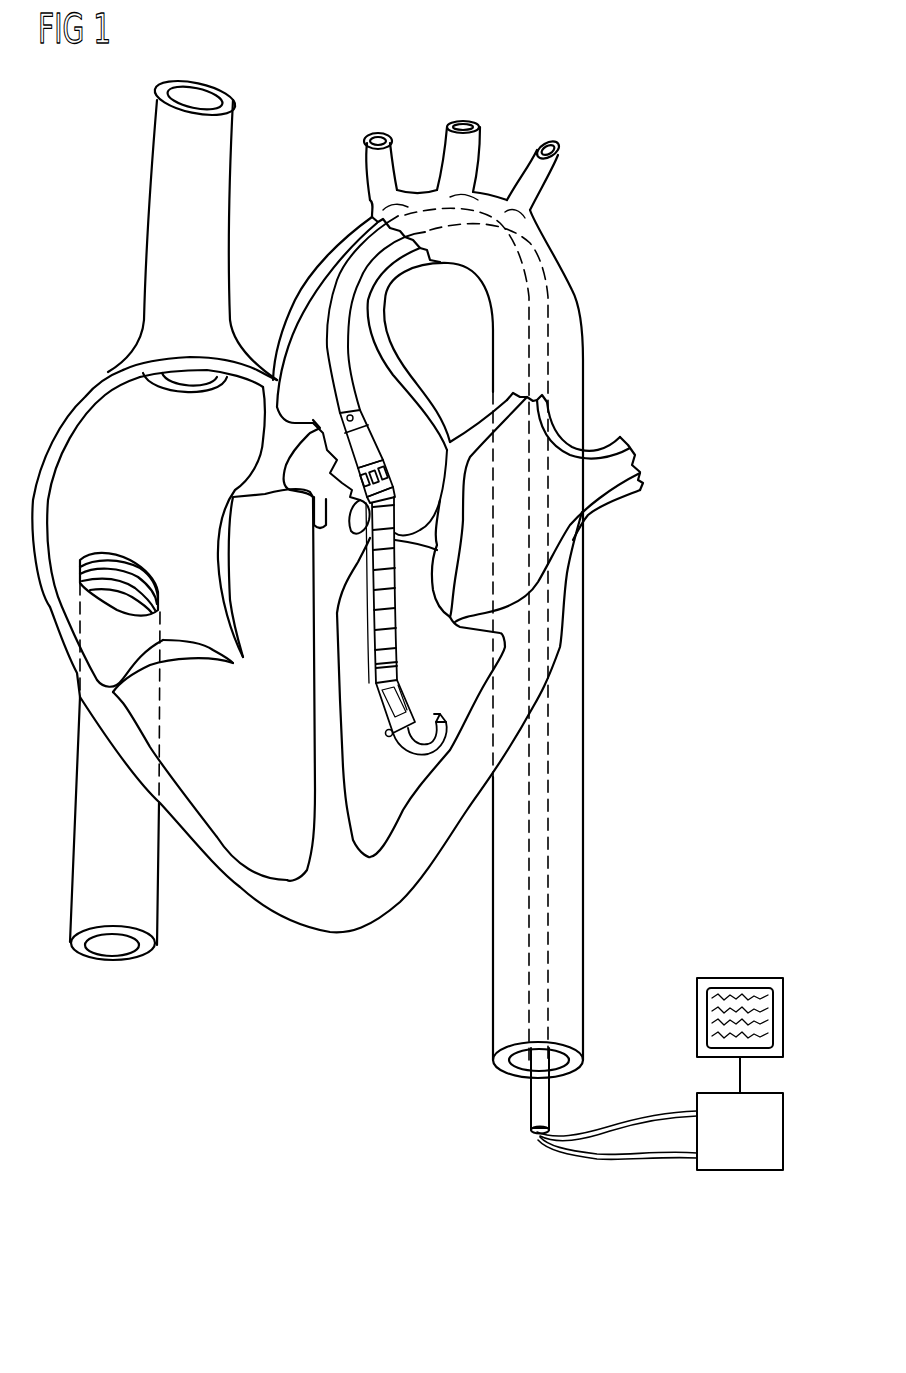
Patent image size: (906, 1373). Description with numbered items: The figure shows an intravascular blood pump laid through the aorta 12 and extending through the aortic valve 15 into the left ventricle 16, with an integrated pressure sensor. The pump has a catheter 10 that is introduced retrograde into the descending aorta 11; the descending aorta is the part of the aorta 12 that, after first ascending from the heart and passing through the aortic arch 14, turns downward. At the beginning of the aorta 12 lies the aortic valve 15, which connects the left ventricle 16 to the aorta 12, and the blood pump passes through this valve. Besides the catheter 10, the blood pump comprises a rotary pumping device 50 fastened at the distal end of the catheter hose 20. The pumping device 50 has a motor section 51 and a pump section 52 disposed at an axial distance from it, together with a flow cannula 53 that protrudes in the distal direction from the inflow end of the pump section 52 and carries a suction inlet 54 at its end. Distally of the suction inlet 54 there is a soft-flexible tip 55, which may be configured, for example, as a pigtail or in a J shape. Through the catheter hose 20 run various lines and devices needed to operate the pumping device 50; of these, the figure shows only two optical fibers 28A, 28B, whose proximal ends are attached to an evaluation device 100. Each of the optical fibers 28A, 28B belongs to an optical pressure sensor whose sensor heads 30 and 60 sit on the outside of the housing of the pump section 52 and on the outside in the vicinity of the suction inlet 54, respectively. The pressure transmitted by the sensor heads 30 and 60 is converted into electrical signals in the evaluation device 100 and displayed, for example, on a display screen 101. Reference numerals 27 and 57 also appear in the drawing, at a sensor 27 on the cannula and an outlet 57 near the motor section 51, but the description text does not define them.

The catheter 10 is at (510, 1118).
The descending aorta 11 is at (620, 638).
The aorta 12 is at (590, 228).
The aortic arch 14 is at (330, 257).
The aortic valve 15 is at (407, 523).
The left ventricle 16 is at (361, 826).
The catheter hose 20 is at (545, 1100).
The pressure sensor 27 is at (378, 668).
The optical fiber 28A is at (672, 1112).
The optical fiber 28B is at (672, 1158).
The sensor head 30 is at (378, 723).
The rotary pumping device 50 is at (400, 424).
The motor section 51 is at (367, 450).
The pump section 52 is at (357, 502).
The flow cannula 53 is at (385, 615).
The suction inlet 54 is at (403, 697).
The soft-flexible tip 55 is at (427, 753).
The outlet 57 is at (340, 411).
The sensor head 60 is at (387, 473).
The evaluation device 100 is at (735, 1165).
The display screen 101 is at (738, 992).